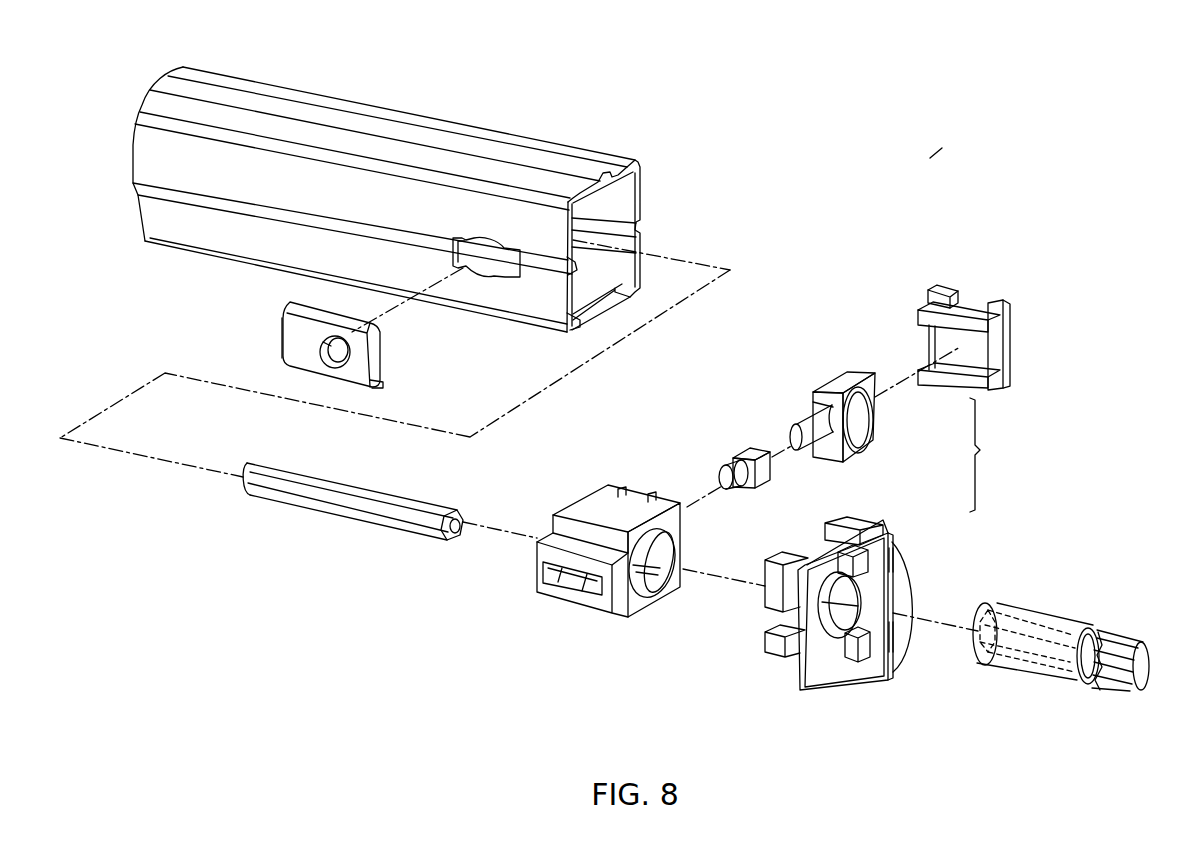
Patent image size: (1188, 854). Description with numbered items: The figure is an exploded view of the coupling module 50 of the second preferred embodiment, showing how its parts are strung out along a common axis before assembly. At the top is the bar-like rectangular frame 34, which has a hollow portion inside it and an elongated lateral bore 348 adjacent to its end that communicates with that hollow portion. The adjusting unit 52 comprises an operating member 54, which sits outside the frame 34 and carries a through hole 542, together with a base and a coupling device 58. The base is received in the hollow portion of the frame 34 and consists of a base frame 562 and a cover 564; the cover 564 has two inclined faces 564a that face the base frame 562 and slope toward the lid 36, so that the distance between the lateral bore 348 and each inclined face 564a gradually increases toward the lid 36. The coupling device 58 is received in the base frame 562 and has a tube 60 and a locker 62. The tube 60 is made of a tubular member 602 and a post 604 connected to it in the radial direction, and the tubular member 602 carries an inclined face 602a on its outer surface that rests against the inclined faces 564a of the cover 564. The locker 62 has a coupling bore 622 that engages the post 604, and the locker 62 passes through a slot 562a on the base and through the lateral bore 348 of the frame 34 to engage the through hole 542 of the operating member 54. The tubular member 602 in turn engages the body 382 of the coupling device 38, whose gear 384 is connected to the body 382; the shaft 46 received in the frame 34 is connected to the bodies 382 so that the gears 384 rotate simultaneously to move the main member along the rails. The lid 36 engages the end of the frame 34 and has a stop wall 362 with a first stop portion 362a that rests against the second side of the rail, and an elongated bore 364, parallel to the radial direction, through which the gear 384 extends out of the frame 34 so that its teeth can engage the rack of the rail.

The frame 34 is at (520, 137).
The lateral bore 348 is at (482, 255).
The operating member 54 is at (278, 312).
The through hole 542 is at (323, 347).
The shaft 46 is at (305, 487).
The adjusting unit 52 is at (365, 610).
The base frame 562 is at (597, 508).
The slot 562a is at (578, 588).
The locker 62 is at (733, 458).
The coupling bore 622 is at (752, 448).
The coupling device 58 is at (782, 393).
The tubular member 602 is at (872, 437).
The inclined face 602a is at (857, 371).
The post 604 is at (813, 440).
The tube 60 is at (991, 455).
The cover 564 is at (998, 302).
The inclined faces 564a is at (943, 312).
The coupling module 50 is at (929, 160).
The lid 36 is at (838, 677).
The first stop portion 362a is at (880, 632).
The stop wall 362 is at (897, 662).
The elongated bore 364 is at (832, 665).
The coupling device 38 is at (1165, 513).
The body 382 is at (1045, 612).
The gear 384 is at (1120, 633).